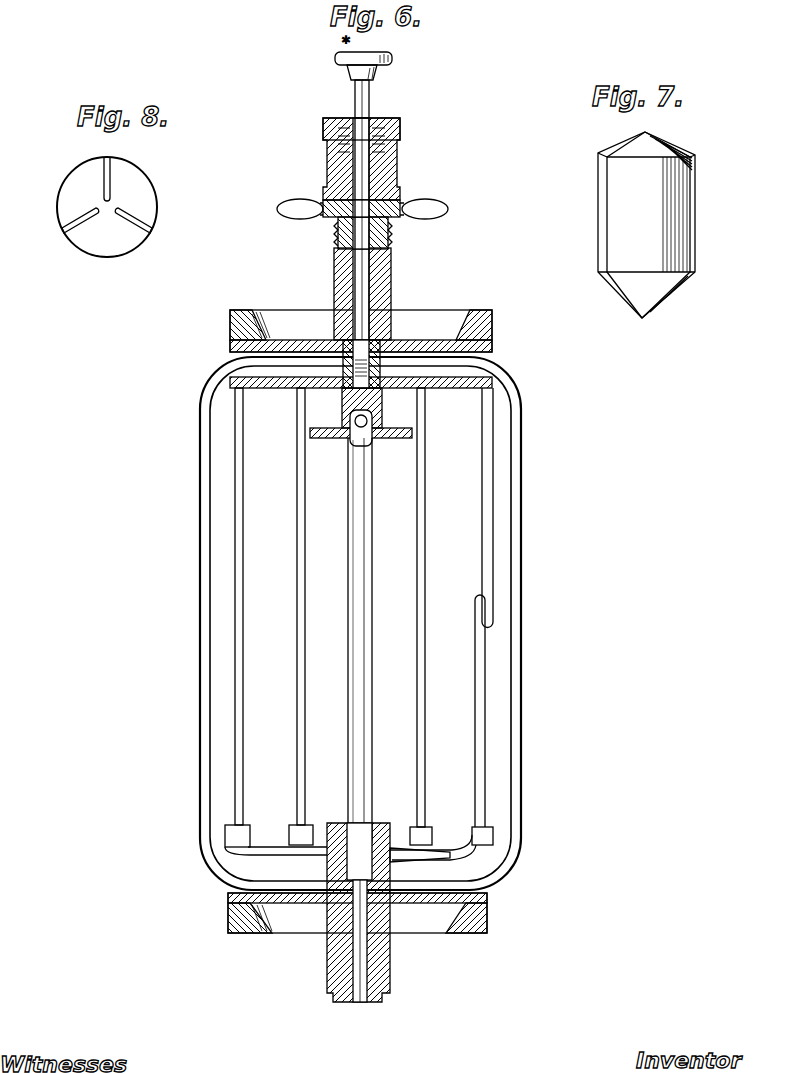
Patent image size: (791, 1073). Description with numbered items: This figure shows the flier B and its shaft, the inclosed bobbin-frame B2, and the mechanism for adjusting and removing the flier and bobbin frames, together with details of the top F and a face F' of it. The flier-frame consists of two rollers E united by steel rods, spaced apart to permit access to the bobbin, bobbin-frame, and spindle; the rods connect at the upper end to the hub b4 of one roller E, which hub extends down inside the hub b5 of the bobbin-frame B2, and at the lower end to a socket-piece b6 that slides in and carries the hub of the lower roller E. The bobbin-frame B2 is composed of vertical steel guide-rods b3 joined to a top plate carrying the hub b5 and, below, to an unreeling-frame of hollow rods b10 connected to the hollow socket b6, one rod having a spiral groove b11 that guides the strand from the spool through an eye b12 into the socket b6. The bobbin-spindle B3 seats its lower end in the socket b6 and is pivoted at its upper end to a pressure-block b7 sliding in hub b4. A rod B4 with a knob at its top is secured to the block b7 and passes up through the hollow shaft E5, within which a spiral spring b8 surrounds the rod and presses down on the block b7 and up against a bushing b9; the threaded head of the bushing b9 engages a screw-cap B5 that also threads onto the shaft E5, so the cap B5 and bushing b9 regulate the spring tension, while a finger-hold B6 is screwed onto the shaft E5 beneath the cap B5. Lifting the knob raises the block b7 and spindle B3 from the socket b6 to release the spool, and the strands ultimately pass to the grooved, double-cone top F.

In FIG. 6, the flier B is at (371, 623).
In FIG. 6, the bobbin-frame B2 is at (470, 388).
In FIG. 6, the bobbin-spindle B3 is at (372, 563).
In FIG. 6, the rod B4 is at (369, 96).
In FIG. 6, the screw-cap B5 is at (400, 158).
In FIG. 6, the finger-hold B6 is at (446, 213).
In FIG. 6, the roller E is at (232, 333).
In FIG. 6, the hollow shaft E5 is at (392, 268).
In FIG. 6, the vertical steel guide-rods b3 is at (240, 433).
In FIG. 6, the hub b4 is at (338, 377).
In FIG. 6, the hub b5 is at (456, 361).
In FIG. 6, the socket-piece b6 is at (380, 825).
In FIG. 6, the pressure-block b7 is at (382, 410).
In FIG. 6, the spiral spring b8 is at (338, 240).
In FIG. 6, the bushing b9 is at (335, 112).
In FIG. 6, the hollow rods b10 is at (470, 832).
In FIG. 6, the spiral groove b11 is at (393, 867).
In FIG. 6, the eye b12 is at (488, 613).
In FIG. 8, the top F is at (89, 207).
In FIG. 7, the crystal F' is at (646, 225).